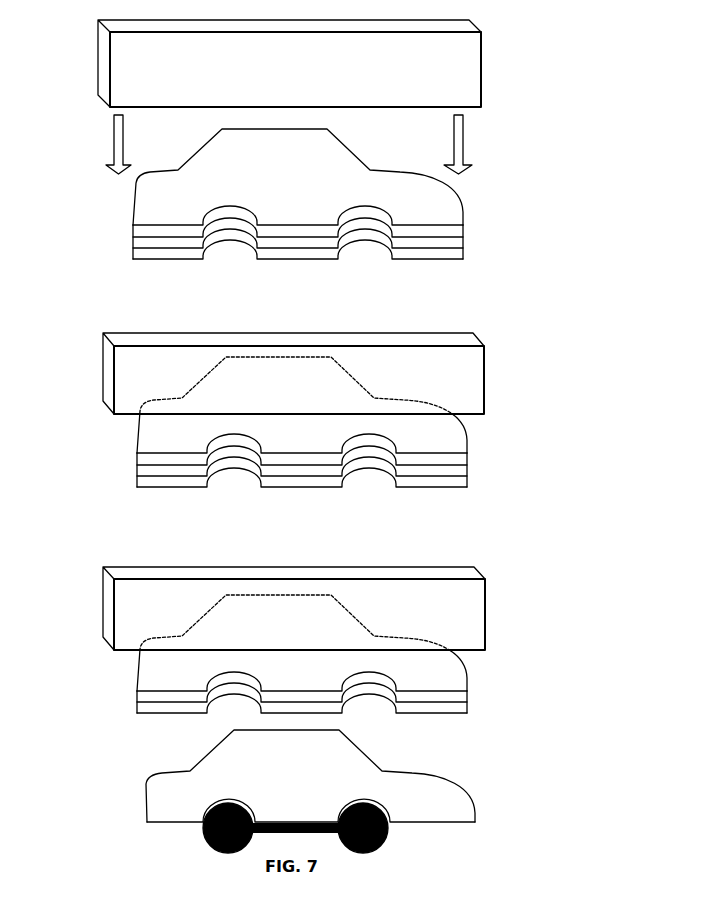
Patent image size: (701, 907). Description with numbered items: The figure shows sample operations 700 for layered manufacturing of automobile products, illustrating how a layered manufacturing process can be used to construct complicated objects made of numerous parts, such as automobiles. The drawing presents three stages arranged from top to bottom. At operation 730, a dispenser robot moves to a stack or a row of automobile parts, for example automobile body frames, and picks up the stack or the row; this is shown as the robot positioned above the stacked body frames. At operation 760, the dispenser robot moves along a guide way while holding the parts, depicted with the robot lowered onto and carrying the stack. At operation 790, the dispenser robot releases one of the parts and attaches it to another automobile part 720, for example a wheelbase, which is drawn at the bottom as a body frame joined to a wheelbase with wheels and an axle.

The sample operations 700 is at (588, 44).
The automobile part 720 is at (203, 833).
The operation 730 is at (506, 157).
The operation 760 is at (505, 408).
The operation 790 is at (498, 680).